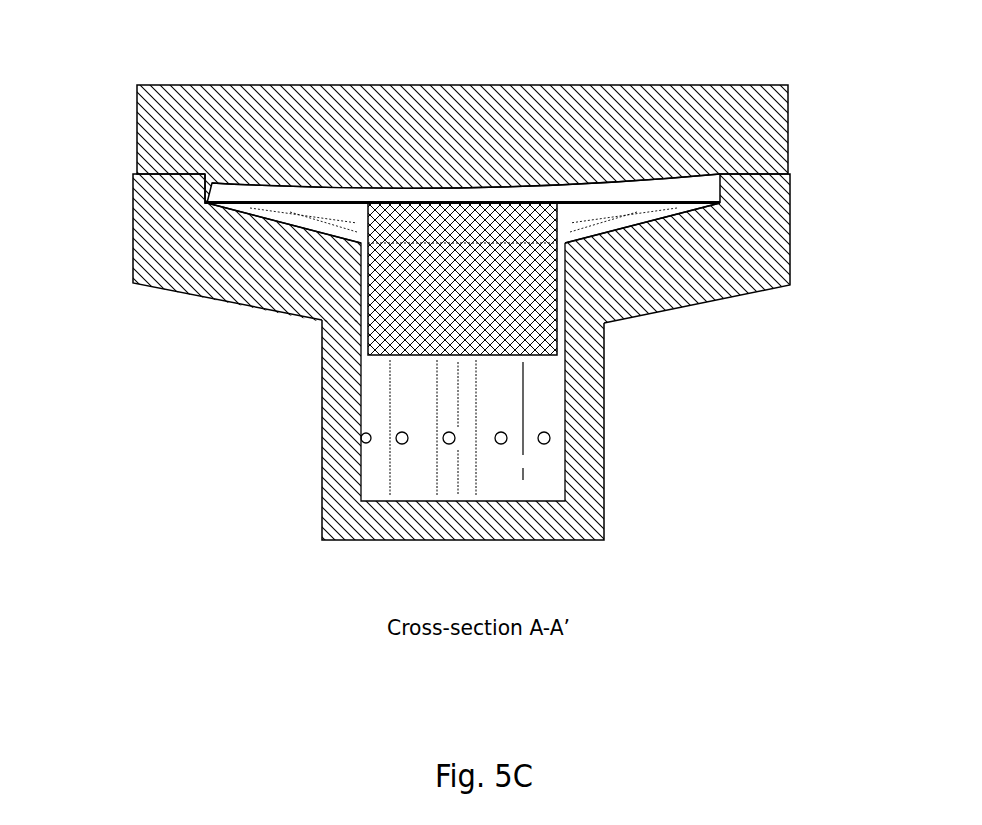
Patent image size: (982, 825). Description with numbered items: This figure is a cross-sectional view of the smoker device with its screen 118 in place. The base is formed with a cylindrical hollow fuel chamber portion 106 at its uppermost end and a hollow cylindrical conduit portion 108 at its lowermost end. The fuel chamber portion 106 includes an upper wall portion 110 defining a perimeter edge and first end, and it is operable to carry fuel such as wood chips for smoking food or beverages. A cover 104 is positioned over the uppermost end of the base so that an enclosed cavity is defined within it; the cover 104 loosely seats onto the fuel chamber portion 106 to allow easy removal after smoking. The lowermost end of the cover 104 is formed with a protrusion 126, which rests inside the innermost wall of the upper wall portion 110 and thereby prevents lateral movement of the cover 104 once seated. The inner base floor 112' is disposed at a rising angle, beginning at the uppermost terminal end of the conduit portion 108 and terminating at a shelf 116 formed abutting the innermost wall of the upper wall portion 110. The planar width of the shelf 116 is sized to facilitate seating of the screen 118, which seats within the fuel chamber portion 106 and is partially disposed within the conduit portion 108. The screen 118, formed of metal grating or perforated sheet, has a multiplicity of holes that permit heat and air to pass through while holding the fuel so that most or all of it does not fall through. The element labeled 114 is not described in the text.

The cover 104 is at (788, 128).
The fuel chamber portion 106 is at (789, 246).
The conduit portion 108 is at (604, 418).
The upper wall portion 110 is at (133, 236).
The inner base floor 112' is at (463, 281).
The channels / openings 114 is at (508, 440).
The shelf 116 is at (210, 200).
The screen 118 is at (370, 314).
The protrusion 126 is at (608, 180).